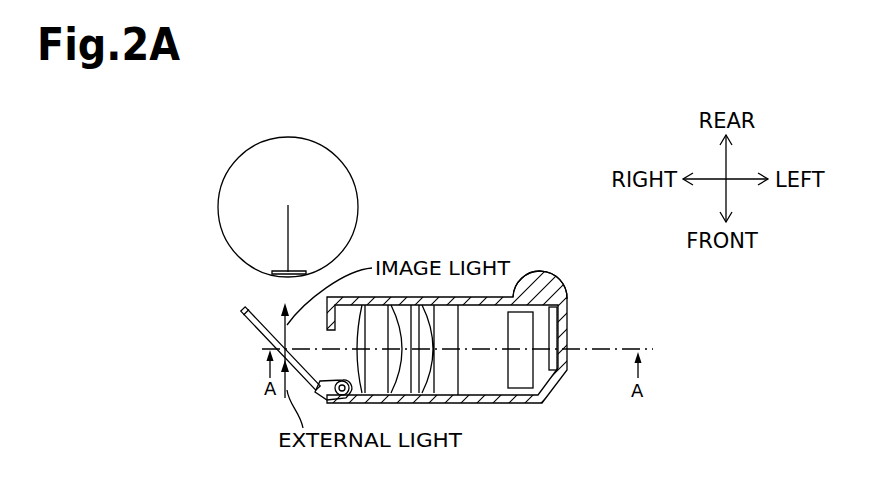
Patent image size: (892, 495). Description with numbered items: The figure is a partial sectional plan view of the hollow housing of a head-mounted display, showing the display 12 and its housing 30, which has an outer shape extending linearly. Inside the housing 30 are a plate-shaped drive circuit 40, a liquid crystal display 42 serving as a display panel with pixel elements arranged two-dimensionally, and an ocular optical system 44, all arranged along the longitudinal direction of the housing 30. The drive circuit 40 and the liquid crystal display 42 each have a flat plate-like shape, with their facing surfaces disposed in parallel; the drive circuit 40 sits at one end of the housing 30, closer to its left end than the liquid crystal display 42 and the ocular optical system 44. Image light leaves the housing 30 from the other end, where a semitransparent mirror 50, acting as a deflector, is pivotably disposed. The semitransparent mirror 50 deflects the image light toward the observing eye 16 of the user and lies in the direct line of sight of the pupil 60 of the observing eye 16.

The display 12 is at (611, 285).
The observing eye 16 is at (327, 168).
The housing 30 is at (545, 286).
The drive circuit 40 is at (555, 373).
The liquid crystal display 42 is at (520, 377).
The ocular optical system 44 is at (467, 373).
The semitransparent mirror 50 is at (258, 330).
The pupil 60 is at (278, 273).